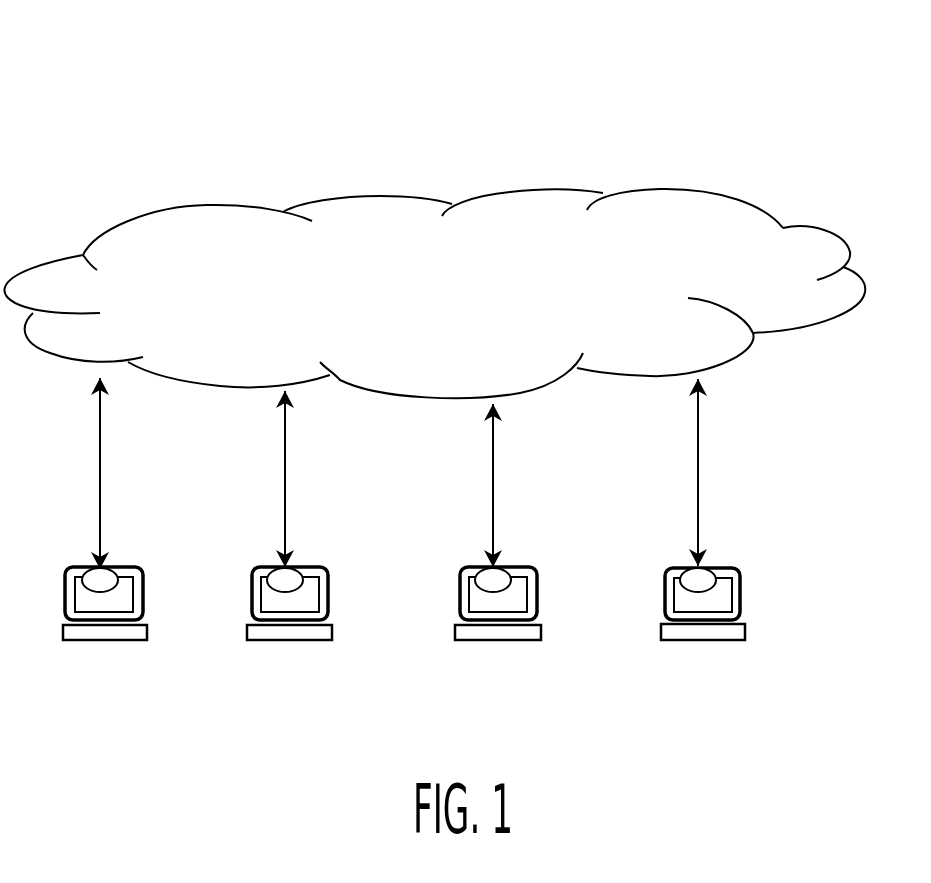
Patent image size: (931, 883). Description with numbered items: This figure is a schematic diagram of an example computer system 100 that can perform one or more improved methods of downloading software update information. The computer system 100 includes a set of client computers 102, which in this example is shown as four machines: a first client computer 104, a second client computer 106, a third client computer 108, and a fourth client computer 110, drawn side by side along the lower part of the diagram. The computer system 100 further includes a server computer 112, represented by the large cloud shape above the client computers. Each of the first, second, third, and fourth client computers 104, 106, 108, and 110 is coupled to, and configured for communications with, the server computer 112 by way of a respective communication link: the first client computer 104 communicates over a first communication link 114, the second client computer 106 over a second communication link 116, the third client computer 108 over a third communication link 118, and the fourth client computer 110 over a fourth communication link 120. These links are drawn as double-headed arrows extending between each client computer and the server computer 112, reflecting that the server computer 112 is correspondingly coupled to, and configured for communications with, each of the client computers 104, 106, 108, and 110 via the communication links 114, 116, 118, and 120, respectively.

The computer system 100 is at (108, 124).
The set of client computers 102 is at (46, 571).
The first client computer 104 is at (164, 613).
The second client computer 106 is at (356, 614).
The third client computer 108 is at (568, 614).
The fourth client computer 110 is at (760, 609).
The server computer 112 is at (545, 190).
The first communication link 114 is at (125, 478).
The second communication link 116 is at (315, 499).
The third communication link 118 is at (516, 502).
The fourth communication link 120 is at (726, 496).